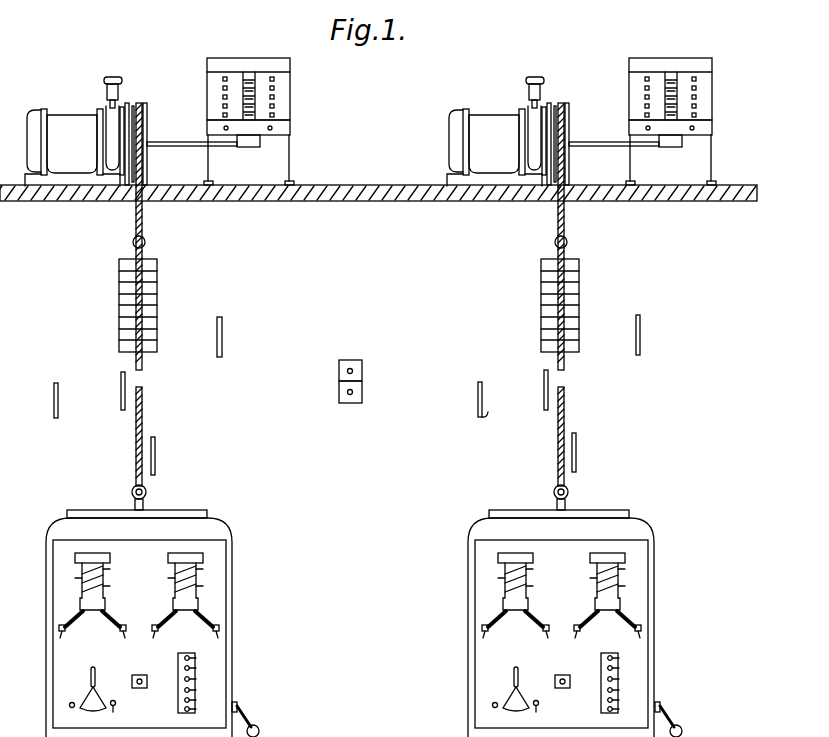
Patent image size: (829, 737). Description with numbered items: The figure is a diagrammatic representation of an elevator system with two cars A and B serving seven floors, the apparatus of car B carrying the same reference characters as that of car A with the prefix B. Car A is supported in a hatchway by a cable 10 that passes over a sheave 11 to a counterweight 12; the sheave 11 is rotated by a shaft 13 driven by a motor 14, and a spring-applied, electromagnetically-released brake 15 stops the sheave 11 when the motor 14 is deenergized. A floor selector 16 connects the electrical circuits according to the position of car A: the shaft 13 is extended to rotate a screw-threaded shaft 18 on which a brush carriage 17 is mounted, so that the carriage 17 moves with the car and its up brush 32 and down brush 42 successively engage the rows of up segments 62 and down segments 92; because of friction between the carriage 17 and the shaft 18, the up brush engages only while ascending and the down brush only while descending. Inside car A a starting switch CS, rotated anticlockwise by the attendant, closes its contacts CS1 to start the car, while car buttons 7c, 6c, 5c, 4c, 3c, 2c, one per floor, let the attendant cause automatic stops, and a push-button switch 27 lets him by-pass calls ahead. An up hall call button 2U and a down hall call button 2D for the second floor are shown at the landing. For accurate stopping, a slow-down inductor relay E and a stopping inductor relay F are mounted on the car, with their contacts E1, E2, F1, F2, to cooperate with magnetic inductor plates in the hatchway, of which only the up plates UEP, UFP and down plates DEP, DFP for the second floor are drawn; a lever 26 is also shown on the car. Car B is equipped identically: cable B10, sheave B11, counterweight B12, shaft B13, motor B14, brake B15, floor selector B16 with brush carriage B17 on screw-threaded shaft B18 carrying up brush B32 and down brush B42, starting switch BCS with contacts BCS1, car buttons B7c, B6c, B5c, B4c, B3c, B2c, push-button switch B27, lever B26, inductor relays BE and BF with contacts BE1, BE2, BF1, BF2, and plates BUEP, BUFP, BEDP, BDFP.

The motor 14 is at (72, 118).
The brake 15 is at (110, 87).
The sheave 11 is at (151, 97).
The shaft 13 is at (184, 145).
The floor selector 16 is at (249, 111).
The screw-threaded shaft 18 is at (250, 72).
The up segments 62 is at (223, 113).
The down segments 92 is at (273, 114).
The brush carriage 17 is at (289, 132).
The up brush 32 is at (226, 131).
The down brush 42 is at (273, 128).
The cable 10 is at (145, 370).
The counterweight 12 is at (153, 280).
The down plate DEP is at (223, 333).
The down plate DFP is at (119, 383).
The up plate UFP is at (59, 411).
The up plate UEP is at (156, 455).
The car A is at (191, 512).
The stopping inductor relay F is at (107, 543).
The slow-down inductor relay E is at (200, 543).
The contact F1 is at (70, 629).
The contact F2 is at (114, 629).
The contact E1 is at (164, 629).
The contact E2 is at (207, 629).
The starting switch CS is at (90, 681).
The contacts CS1 is at (118, 715).
The push-button switch 27 is at (147, 684).
The car button 7c is at (199, 657).
The car button 6c is at (199, 669).
The car button 5c is at (199, 681).
The car button 4c is at (199, 693).
The car button 3c is at (199, 705).
The car button 2c is at (199, 715).
The lever 26 is at (256, 726).
The up hall call button 2U is at (353, 370).
The down hall call button 2D is at (353, 392).
The motor B14 is at (500, 103).
The brake B15 is at (545, 84).
The sheave B11 is at (571, 112).
The shaft B13 is at (599, 145).
The floor selector B16 is at (675, 111).
The screw-threaded shaft B18 is at (672, 72).
The brush carriage B17 is at (715, 132).
The up brush B32 is at (648, 131).
The down brush B42 is at (695, 128).
The cable B10 is at (567, 370).
The counterweight B12 is at (576, 280).
The down plate BEDP is at (641, 333).
The down plate BDFP is at (543, 380).
The up plate BUFP is at (480, 411).
The up plate BUEP is at (577, 459).
The car B is at (621, 512).
The stopping inductor relay BF is at (529, 543).
The slow-down inductor relay BE is at (622, 543).
The contact BF1 is at (492, 629).
The contact BF2 is at (534, 629).
The contact BE1 is at (584, 629).
The contact BE2 is at (629, 629).
The starting switch BCS is at (513, 681).
The contacts BCS1 is at (544, 715).
The push-button switch B27 is at (560, 689).
The car button B7c is at (626, 657).
The car button B6c is at (626, 669).
The car button B5c is at (626, 681).
The car button B4c is at (626, 693).
The car button B3c is at (626, 705).
The car button B2c is at (626, 715).
The lever B26 is at (679, 726).